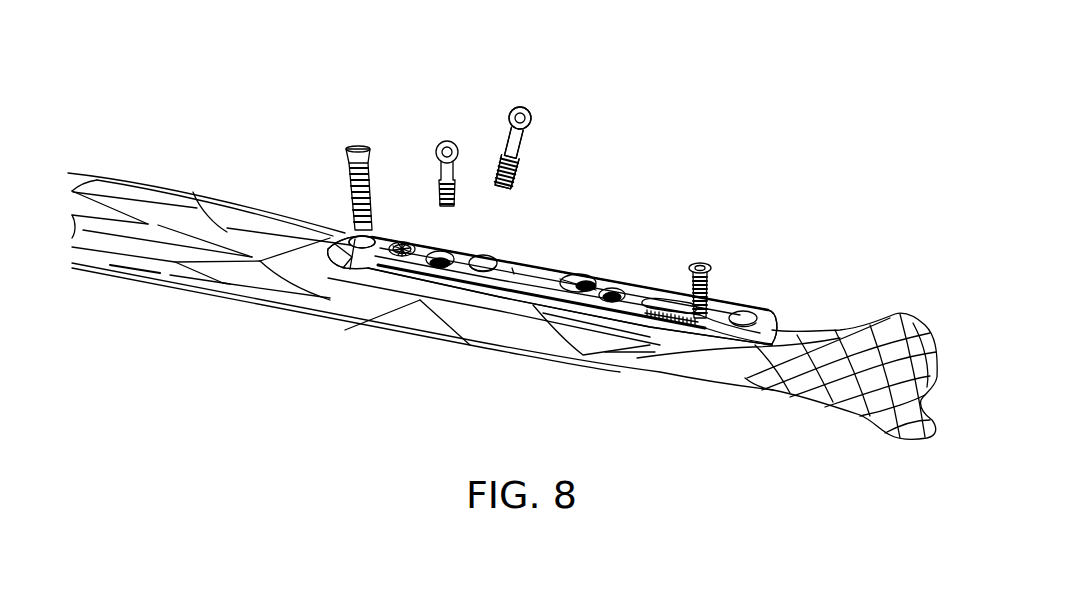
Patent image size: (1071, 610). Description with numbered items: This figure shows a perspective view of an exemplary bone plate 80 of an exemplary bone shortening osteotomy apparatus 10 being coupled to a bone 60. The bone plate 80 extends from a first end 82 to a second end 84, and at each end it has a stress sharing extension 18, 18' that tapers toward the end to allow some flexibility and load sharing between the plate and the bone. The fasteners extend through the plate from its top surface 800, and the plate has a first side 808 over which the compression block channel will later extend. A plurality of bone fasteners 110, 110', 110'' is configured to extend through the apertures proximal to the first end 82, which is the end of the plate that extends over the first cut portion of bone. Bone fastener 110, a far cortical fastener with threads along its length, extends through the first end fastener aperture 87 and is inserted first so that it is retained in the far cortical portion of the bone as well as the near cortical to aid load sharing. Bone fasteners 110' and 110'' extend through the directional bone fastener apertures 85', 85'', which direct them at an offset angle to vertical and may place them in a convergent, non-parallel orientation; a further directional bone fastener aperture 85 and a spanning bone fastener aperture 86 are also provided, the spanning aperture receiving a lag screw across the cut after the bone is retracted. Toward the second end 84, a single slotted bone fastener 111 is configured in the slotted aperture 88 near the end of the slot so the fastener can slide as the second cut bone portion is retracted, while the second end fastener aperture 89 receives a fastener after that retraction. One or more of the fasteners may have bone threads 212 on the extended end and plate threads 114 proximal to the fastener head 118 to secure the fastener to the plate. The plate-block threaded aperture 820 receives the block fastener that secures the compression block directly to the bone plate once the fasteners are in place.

The bone shortening osteotomy apparatus 10 is at (675, 164).
The stress sharing extension 18 is at (347, 180).
The stress sharing extension 18' is at (709, 261).
The bone 60 is at (842, 343).
The bone plate 80 is at (433, 246).
The first end 82 is at (333, 238).
The second end 84 is at (764, 330).
The directional bone fastener aperture 85 is at (601, 360).
The directional bone fastener aperture 85' is at (479, 326).
The directional bone fastener aperture 85'' is at (429, 317).
The spanning bone fastener aperture 86 is at (573, 276).
The first end fastener aperture 87 is at (352, 259).
The slotted aperture 88 is at (655, 300).
The second end fastener aperture 89 is at (748, 343).
The bone fastener 110 is at (350, 142).
The bone fastener 110' is at (557, 136).
The bone fastener 110'' is at (417, 142).
The slotted bone fastener 111 is at (690, 322).
The plate threads 114 is at (513, 112).
The fastener head 118 is at (530, 112).
The bone threads 212 is at (500, 163).
The top surface 800 is at (513, 268).
The first side 808 is at (522, 286).
The plate-block threaded aperture 820 is at (401, 257).